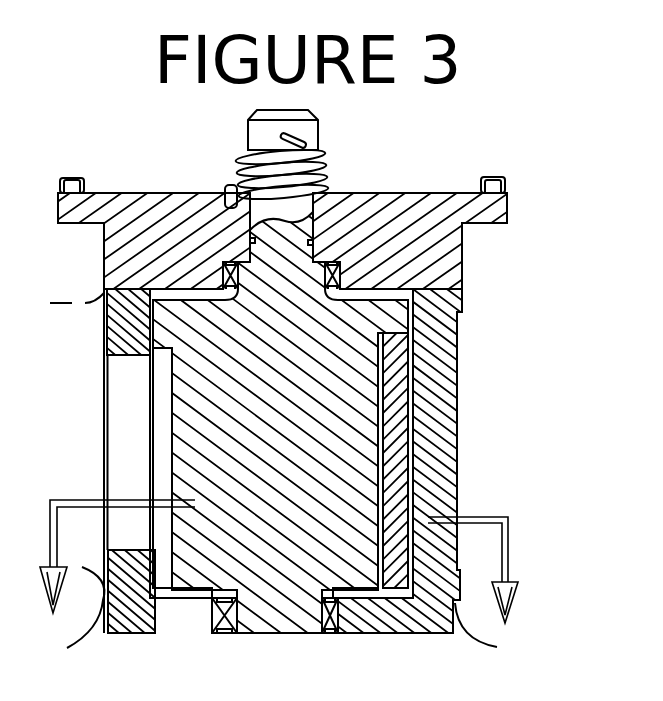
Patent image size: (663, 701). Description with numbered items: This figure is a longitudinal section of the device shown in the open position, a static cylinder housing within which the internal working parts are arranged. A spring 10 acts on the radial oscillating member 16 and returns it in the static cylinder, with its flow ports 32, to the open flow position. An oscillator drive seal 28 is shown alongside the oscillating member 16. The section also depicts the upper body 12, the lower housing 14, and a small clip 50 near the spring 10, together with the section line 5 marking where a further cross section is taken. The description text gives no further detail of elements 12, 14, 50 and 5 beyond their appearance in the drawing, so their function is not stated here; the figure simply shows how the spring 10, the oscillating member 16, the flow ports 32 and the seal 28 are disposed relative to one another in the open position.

The spring 10 is at (323, 153).
The body 12 is at (452, 262).
The housing 14 is at (458, 313).
The radial oscillating member 16 is at (335, 383).
The oscillator drive seal 28 is at (397, 367).
The flow ports 32 is at (130, 423).
The clip 50 is at (215, 192).
The section line 5- 5 is at (280, 580).